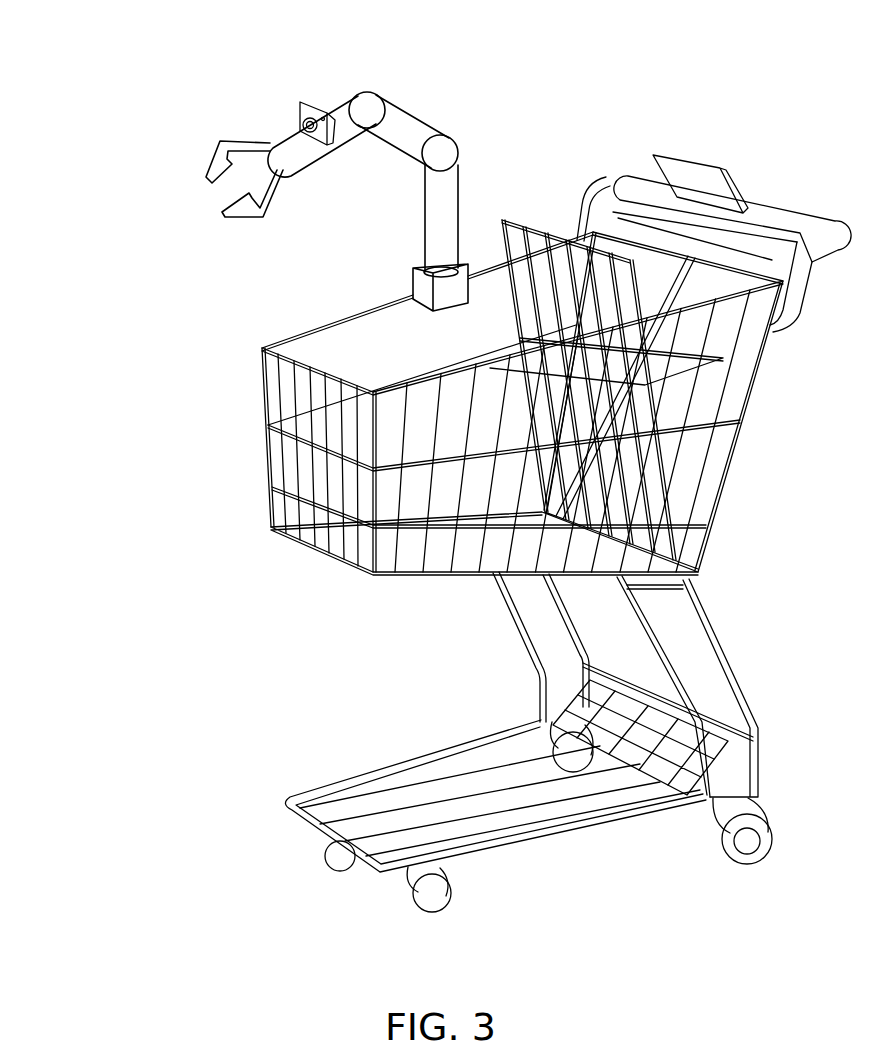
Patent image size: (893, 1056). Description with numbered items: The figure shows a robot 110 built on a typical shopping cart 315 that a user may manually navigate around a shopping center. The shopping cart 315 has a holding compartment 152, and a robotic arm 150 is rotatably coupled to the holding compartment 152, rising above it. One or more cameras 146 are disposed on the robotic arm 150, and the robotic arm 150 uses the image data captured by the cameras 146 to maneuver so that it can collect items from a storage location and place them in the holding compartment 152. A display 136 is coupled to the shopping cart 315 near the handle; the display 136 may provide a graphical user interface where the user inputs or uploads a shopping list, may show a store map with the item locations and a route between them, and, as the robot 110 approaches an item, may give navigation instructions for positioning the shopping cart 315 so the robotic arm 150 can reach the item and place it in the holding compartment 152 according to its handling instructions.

The robot 110 is at (116, 116).
The display 136 is at (737, 182).
The cameras 146 is at (303, 102).
The robotic arm 150 is at (407, 112).
The holding compartment 152 is at (349, 331).
The shopping cart 315 is at (268, 425).